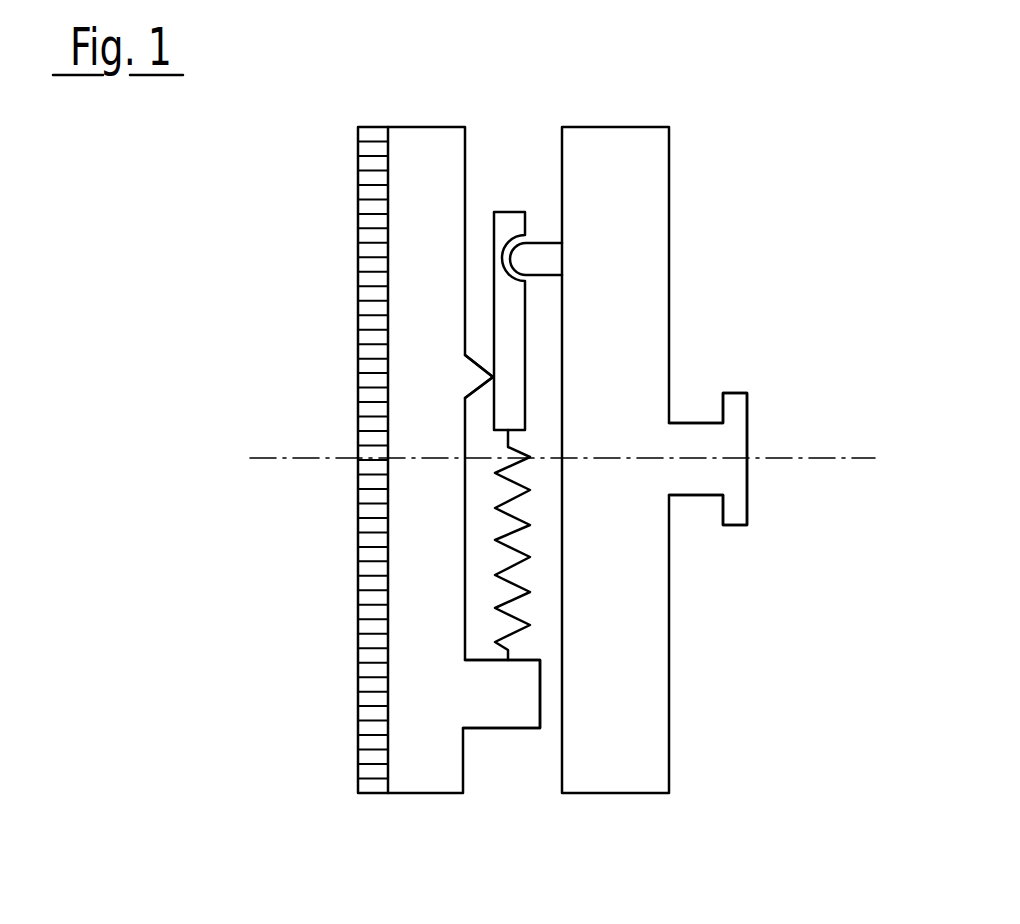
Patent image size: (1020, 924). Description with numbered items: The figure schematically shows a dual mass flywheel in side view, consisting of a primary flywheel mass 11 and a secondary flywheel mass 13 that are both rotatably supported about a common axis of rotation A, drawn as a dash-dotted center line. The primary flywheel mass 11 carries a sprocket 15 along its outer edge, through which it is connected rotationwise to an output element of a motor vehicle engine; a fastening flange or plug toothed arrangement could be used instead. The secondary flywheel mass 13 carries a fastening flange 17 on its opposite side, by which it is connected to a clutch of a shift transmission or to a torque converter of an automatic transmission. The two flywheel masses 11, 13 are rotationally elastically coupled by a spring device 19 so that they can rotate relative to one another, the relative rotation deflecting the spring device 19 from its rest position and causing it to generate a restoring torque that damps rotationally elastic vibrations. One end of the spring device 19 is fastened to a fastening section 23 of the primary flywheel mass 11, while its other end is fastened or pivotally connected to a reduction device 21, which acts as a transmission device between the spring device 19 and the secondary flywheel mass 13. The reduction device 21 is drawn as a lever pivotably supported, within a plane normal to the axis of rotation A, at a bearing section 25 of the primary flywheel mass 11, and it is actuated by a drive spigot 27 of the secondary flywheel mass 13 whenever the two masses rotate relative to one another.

The primary flywheel mass 11 is at (416, 95).
The secondary flywheel mass 13 is at (642, 95).
The sprocket 15 is at (375, 215).
The fastening flange 17 is at (737, 404).
The spring device 19 is at (515, 535).
The reduction device 21 is at (552, 314).
The fastening section 23 is at (508, 696).
The bearing section 25 is at (475, 378).
The drive spigot 27 is at (547, 257).
The axis of rotation A is at (310, 458).